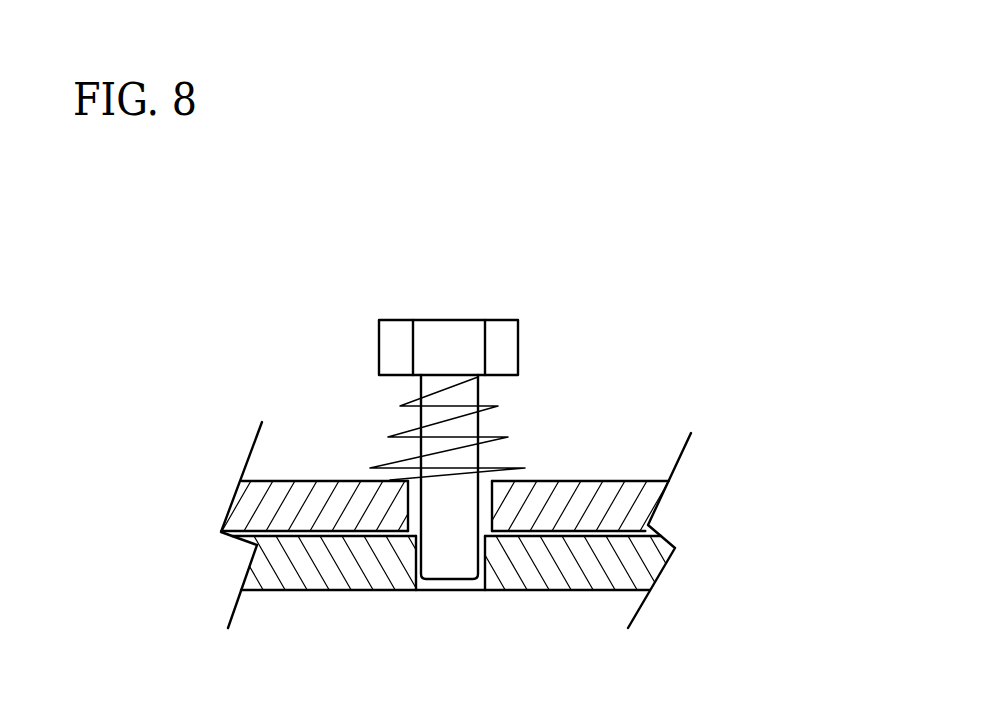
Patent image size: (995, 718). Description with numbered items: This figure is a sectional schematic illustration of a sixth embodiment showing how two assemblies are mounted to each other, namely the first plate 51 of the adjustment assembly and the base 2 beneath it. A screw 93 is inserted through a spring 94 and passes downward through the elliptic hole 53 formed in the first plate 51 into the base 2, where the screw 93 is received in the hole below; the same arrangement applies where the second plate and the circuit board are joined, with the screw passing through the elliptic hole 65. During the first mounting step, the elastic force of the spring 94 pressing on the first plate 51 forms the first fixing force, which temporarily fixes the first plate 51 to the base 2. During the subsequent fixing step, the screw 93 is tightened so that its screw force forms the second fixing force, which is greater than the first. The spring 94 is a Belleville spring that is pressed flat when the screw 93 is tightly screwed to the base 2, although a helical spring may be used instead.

The screw 93 is at (463, 338).
The spring 94 is at (395, 437).
The elliptic hole 53 is at (493, 500).
The first plate 51 is at (645, 510).
The base 2 is at (642, 572).
The elliptic hole 65 is at (470, 585).